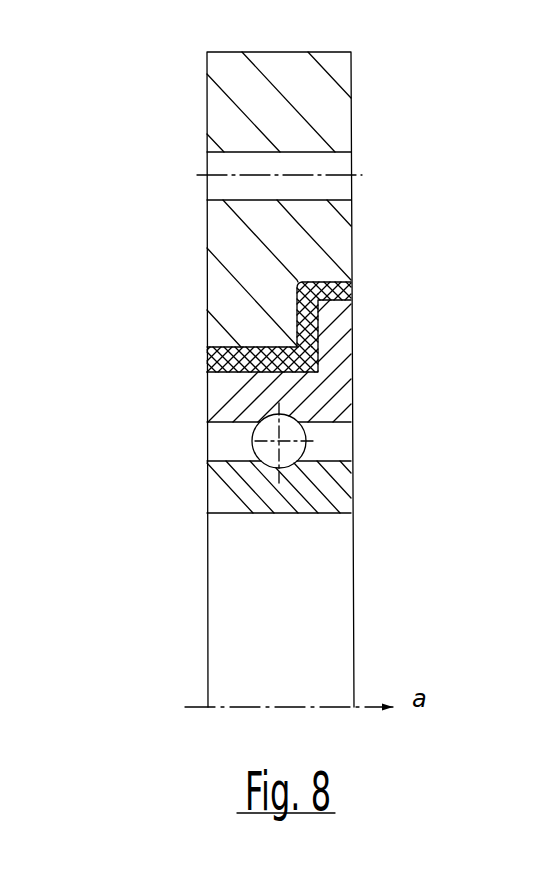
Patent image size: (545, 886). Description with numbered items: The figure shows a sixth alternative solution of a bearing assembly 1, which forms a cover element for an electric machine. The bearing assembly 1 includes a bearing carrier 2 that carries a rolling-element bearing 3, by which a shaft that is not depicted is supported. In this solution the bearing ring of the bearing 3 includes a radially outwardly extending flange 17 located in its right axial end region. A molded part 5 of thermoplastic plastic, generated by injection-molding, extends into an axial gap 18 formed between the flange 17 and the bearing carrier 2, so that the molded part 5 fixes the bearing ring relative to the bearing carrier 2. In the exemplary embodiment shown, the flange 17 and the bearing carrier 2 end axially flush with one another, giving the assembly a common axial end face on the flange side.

The bearing assembly 1 is at (125, 150).
The bearing carrier 2 is at (335, 105).
The rolling-element bearing 3 is at (223, 437).
The molded part 5 is at (247, 361).
The flange 17 is at (318, 323).
The axial gap 18 is at (310, 308).